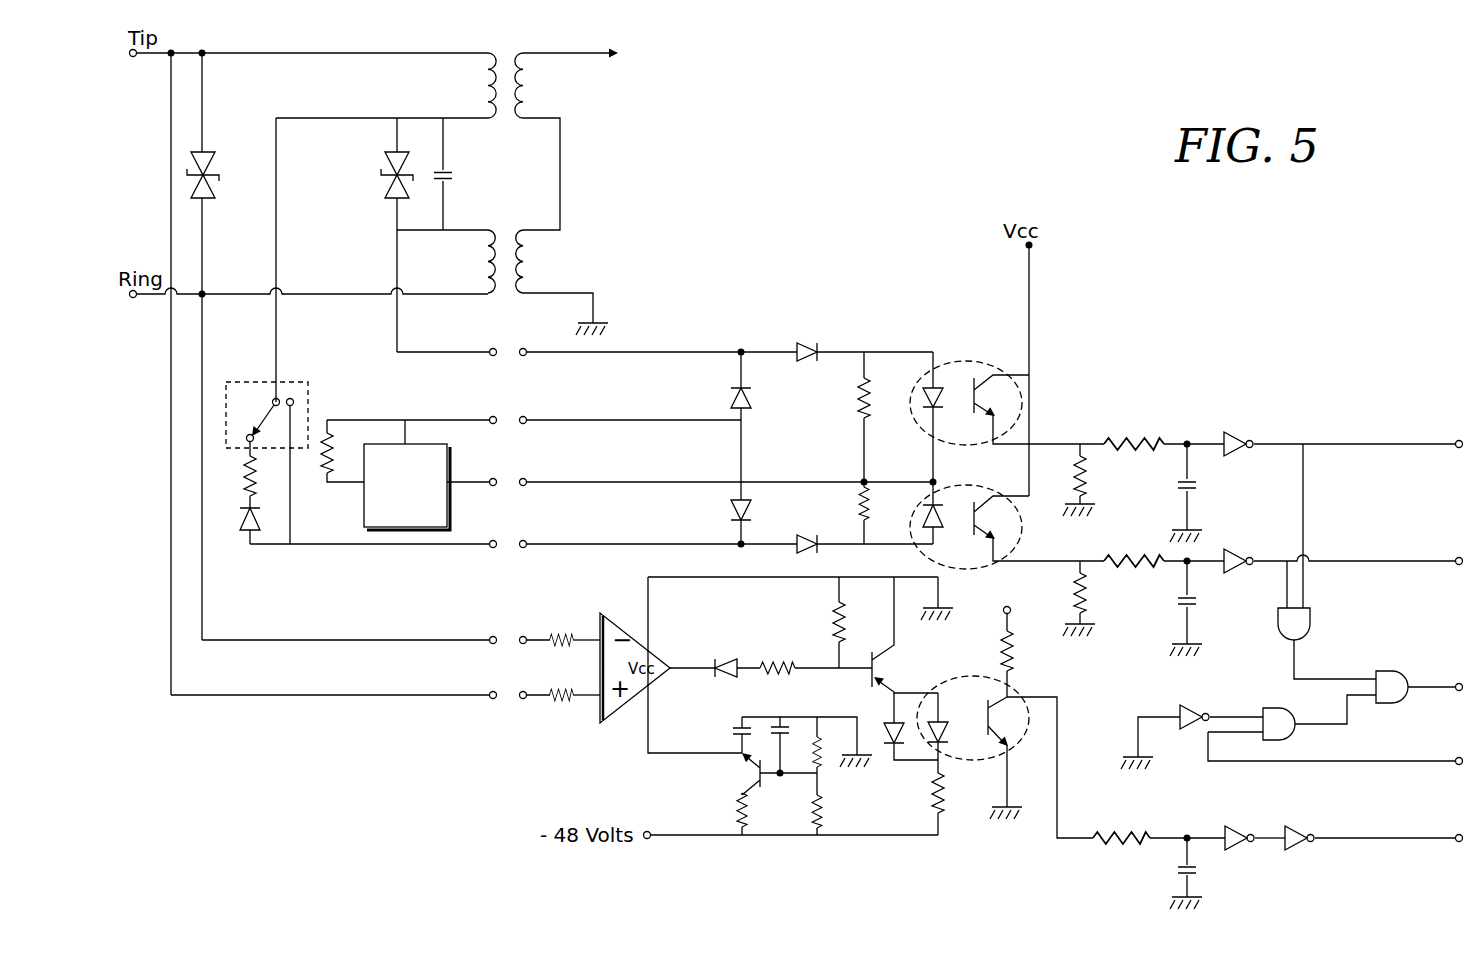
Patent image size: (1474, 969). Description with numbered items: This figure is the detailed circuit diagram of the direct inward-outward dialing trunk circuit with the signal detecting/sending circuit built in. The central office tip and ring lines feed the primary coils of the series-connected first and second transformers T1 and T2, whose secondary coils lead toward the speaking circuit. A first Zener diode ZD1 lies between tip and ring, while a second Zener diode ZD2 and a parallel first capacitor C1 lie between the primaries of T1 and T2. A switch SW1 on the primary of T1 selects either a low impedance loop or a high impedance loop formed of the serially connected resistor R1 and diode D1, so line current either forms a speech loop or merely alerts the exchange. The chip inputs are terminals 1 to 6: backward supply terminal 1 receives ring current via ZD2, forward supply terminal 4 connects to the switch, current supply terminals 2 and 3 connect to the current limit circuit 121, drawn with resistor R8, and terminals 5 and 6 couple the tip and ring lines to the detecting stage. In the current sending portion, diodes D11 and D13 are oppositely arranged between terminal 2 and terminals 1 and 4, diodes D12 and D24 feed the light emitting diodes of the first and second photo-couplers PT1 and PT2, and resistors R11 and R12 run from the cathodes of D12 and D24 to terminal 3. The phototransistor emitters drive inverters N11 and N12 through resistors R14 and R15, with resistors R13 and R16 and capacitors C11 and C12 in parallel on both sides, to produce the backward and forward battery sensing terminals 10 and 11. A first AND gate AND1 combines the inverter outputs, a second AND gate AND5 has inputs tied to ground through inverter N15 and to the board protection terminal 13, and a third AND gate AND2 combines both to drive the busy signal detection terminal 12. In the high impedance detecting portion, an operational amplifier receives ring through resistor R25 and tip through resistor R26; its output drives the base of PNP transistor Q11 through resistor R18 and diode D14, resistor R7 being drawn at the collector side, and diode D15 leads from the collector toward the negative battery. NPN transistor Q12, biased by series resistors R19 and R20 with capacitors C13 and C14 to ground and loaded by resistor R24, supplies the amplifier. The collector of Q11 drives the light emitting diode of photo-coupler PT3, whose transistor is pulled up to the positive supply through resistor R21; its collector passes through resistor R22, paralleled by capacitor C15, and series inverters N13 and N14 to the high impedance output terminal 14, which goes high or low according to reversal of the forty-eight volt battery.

The backward supply terminal 1 is at (569, 339).
The current supply terminal 2 is at (534, 408).
The current limiting terminal 3 is at (594, 470).
The forward supply terminal 4 is at (495, 532).
The input terminal 5 is at (360, 683).
The input terminal 6 is at (376, 628).
The backward battery sensing terminal 10 is at (1358, 431).
The forward battery sensing terminal 11 is at (1360, 548).
The busy signal detection terminal 12 is at (1437, 696).
The board protection terminal 13 is at (1337, 748).
The high impedance output terminal 14 is at (1390, 826).
The current limit circuit 121 is at (364, 518).
The first Zener diode ZD1 is at (226, 346).
The second Zener diode ZD2 is at (374, 235).
The first capacitor C1 is at (456, 174).
The first transformer T1 is at (553, 129).
The second transformer T2 is at (502, 270).
The switch SW1 is at (266, 402).
The resistor R1 is at (235, 474).
The diode D1 is at (234, 526).
The resistor R8 is at (330, 451).
The diode D11 is at (723, 386).
The diode D12 is at (837, 341).
The diode D13 is at (723, 513).
The diode D24 is at (837, 534).
The resistor R11 is at (844, 417).
The resistor R12 is at (843, 513).
The first photo-coupler PT1 is at (1007, 417).
The second photo-coupler PT2 is at (1007, 525).
The photo-coupler PT3 is at (973, 755).
The resistor R13 is at (1096, 480).
The resistor R14 is at (1164, 431).
The resistor R15 is at (1164, 548).
The resistor R16 is at (1096, 598).
The capacitor C11 is at (1202, 493).
The capacitor C12 is at (1202, 608).
The inverter N11 is at (1253, 434).
The inverter N12 is at (1253, 551).
The inverter N13 is at (1252, 824).
The inverter N14 is at (1302, 824).
The inverter N15 is at (1165, 725).
The first AND gate AND1 is at (1327, 620).
The third AND gate AND2 is at (1369, 685).
The second AND gate AND5 is at (1281, 729).
The resistor R21 is at (1043, 709).
The resistor R22 is at (1159, 825).
The capacitor C15 is at (1203, 873).
The resistor R25 is at (573, 627).
The resistor R26 is at (573, 683).
The diode D14 is at (732, 655).
The resistor R18 is at (816, 653).
The resistor R7 is at (853, 622).
The PNP type transistor Q11 is at (906, 635).
The diode D15 is at (894, 726).
The capacitor C13 is at (775, 729).
The capacitor C14 is at (717, 734).
The NPN type transistor Q12 is at (756, 772).
The resistor R19 is at (836, 752).
The resistor R20 is at (794, 804).
The resistor R24 is at (717, 814).